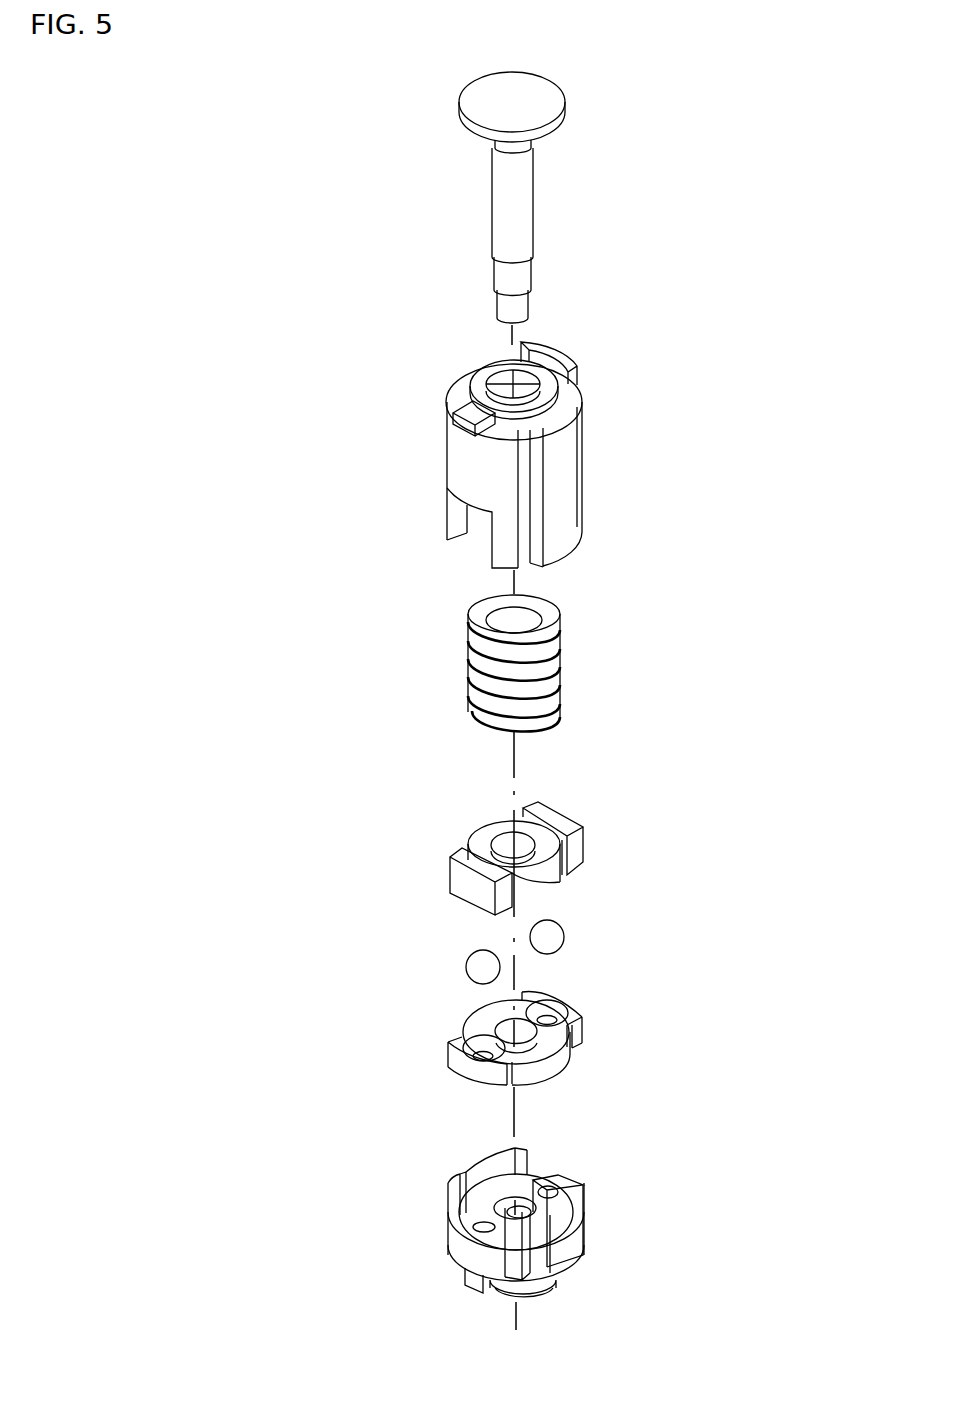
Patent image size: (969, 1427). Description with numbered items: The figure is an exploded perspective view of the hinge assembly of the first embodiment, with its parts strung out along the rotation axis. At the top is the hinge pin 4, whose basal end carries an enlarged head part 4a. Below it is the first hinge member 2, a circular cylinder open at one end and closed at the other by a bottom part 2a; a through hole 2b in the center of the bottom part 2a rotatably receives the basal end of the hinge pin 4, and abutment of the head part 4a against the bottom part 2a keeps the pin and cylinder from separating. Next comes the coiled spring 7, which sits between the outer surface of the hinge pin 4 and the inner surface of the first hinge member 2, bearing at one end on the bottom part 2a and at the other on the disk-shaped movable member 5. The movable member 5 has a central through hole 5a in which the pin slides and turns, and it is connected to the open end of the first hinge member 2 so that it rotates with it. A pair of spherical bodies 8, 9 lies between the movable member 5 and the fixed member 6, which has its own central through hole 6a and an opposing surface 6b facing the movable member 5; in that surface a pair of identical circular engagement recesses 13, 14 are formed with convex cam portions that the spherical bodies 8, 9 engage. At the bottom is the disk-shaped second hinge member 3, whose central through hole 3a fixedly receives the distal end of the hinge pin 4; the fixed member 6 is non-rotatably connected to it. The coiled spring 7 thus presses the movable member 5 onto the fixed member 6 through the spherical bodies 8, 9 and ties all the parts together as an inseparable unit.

The first hinge member 2 is at (526, 438).
The bottom part 2a is at (477, 387).
The through hole 2b is at (531, 387).
The second hinge member 3 is at (493, 1213).
The through hole 3a is at (523, 1212).
The hinge pin 4 is at (535, 218).
The head part 4a is at (565, 113).
The movable member 5 is at (537, 833).
The through hole 5a is at (505, 838).
The fixed member 6 is at (494, 1050).
The through hole 6a is at (525, 1030).
The opposing surface 6b is at (527, 1050).
The coiled spring 7 is at (560, 680).
The spherical body 8 is at (468, 958).
The spherical body 9 is at (563, 932).
The engagement recess 13 is at (463, 1016).
The engagement recess 14 is at (560, 1013).